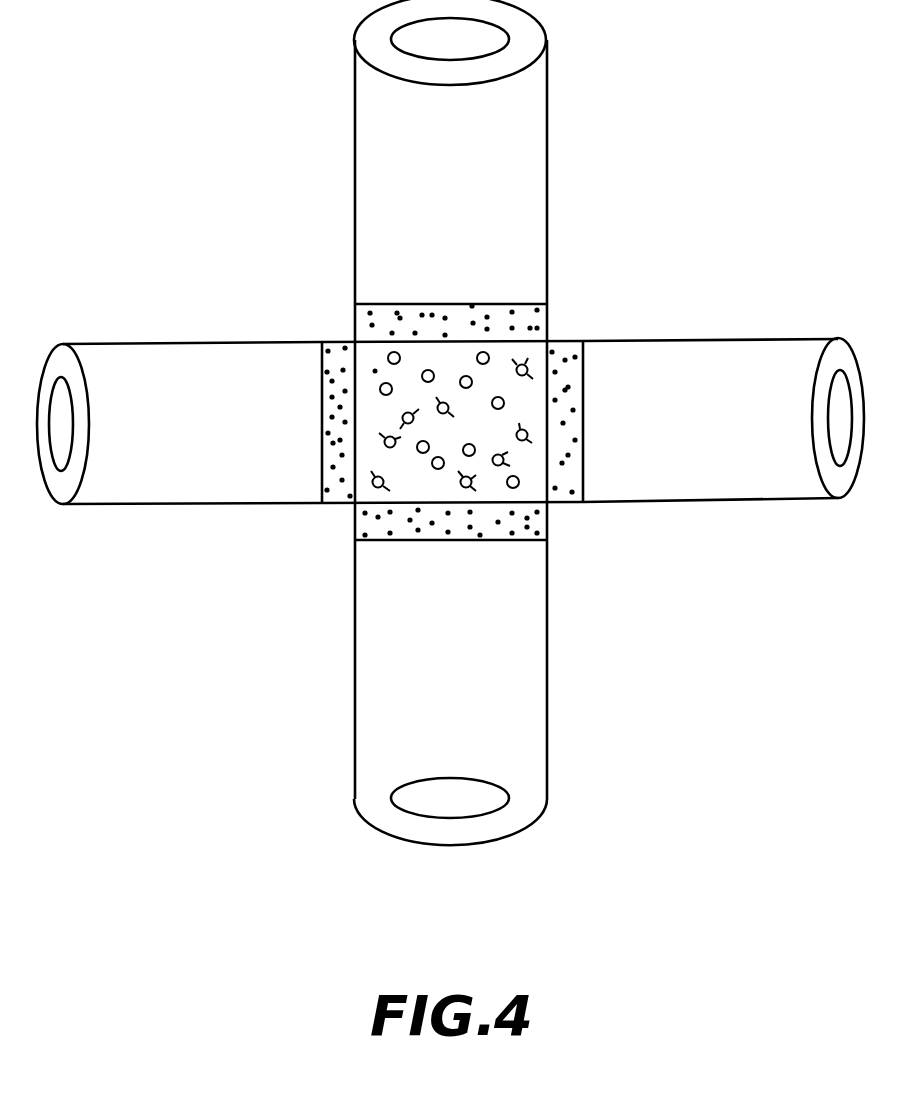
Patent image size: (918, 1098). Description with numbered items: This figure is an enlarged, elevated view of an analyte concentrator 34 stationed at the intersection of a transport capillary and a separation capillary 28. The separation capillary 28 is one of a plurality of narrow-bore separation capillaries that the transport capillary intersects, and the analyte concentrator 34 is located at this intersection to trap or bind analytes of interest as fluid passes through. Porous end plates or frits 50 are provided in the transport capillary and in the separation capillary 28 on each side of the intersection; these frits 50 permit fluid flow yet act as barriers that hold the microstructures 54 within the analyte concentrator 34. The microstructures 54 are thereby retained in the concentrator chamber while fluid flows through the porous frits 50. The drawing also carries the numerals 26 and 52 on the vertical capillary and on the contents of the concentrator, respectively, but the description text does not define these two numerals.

The vertical channel tube 26 is at (375, 160).
The separation capillary 28 is at (137, 343).
The porous end plates or frits 50 is at (340, 342).
The analyte concentrator 34 is at (363, 467).
The cells / microorganisms 52 is at (492, 488).
The microstructures 54 is at (465, 375).